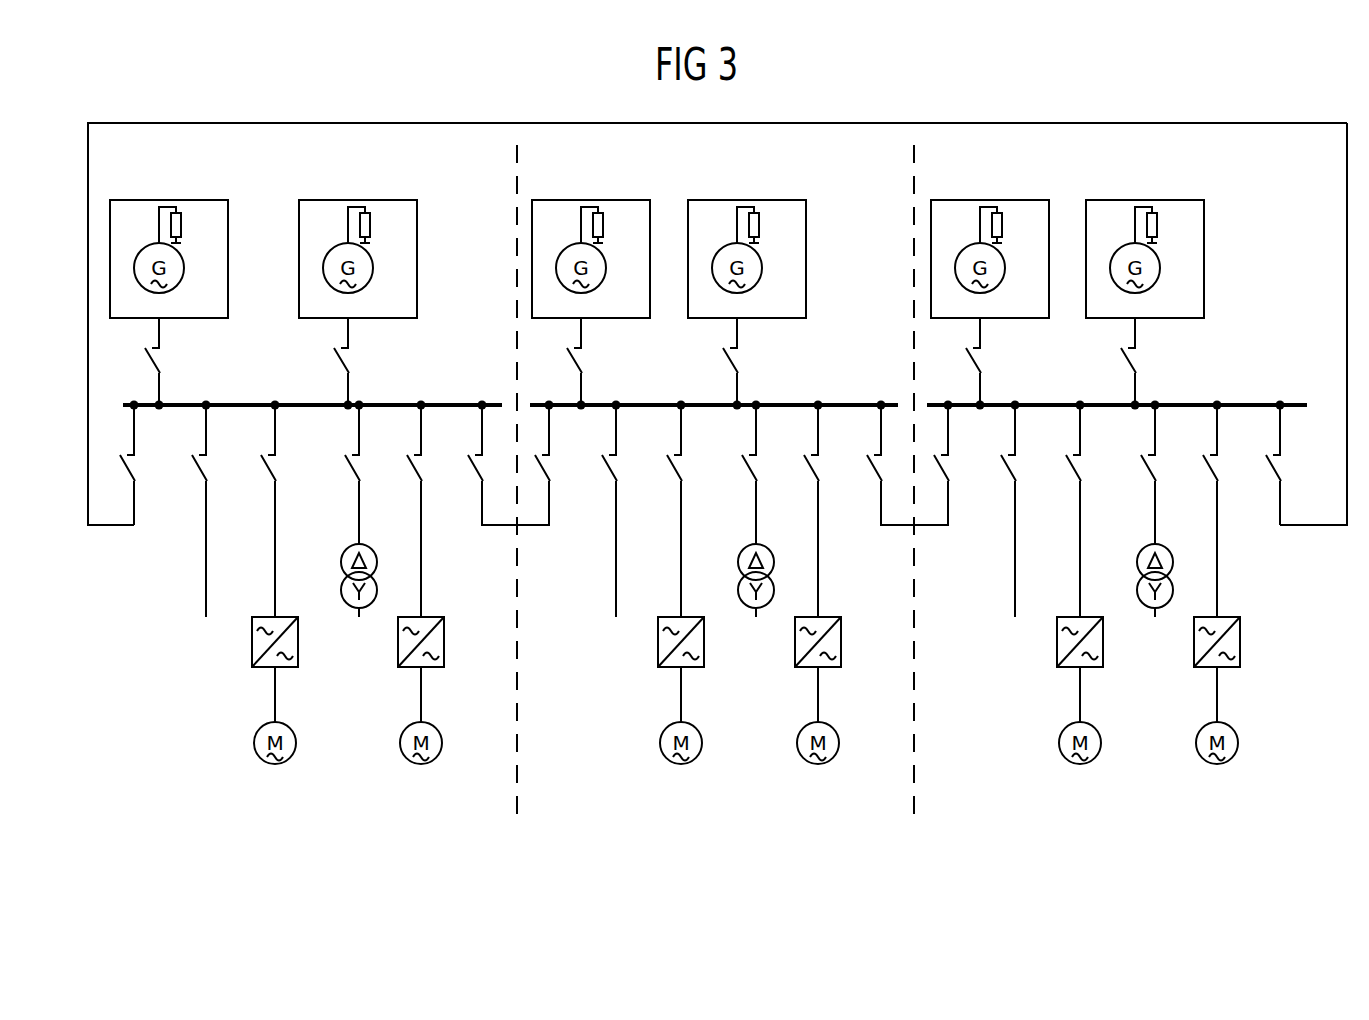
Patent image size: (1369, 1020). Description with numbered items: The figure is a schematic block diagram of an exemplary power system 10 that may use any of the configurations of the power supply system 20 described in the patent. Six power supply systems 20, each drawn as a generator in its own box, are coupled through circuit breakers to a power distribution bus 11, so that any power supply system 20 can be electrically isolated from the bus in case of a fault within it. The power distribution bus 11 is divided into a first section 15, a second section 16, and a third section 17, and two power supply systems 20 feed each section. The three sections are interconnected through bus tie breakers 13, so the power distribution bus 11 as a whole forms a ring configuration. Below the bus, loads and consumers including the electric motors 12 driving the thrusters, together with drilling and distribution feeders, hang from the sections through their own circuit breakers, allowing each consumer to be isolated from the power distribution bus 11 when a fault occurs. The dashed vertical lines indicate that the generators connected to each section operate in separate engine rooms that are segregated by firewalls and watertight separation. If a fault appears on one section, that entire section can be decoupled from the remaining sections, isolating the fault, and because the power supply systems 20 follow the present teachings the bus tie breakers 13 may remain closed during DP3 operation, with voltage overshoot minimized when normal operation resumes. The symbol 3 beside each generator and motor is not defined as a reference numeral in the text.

The power system 10 is at (108, 90).
The power distribution bus 11 is at (80, 382).
The electric motors 12 is at (160, 603).
The bus tie breakers 13 is at (1347, 305).
The first section 15 is at (240, 403).
The second section 16 is at (648, 403).
The third section 17 is at (1048, 403).
The power supply system 20 is at (667, 228).
The three-phase electrical machine 3 is at (707, 485).